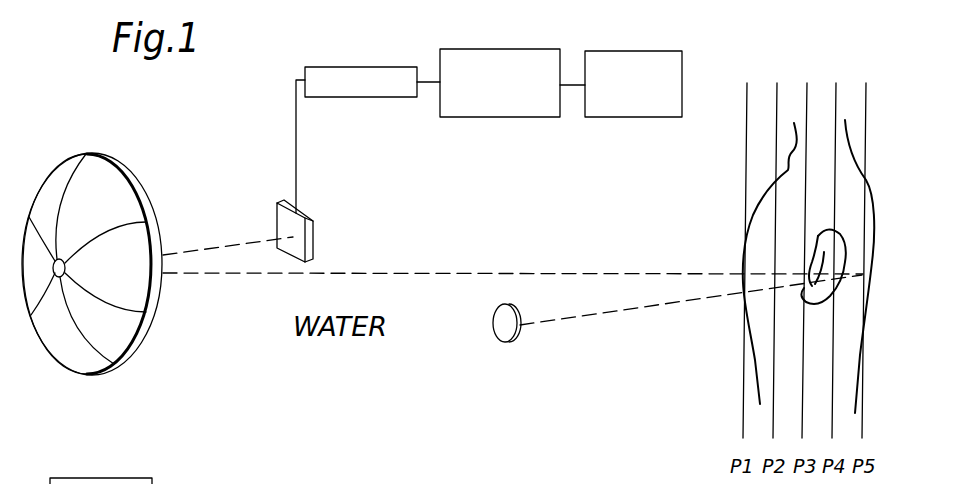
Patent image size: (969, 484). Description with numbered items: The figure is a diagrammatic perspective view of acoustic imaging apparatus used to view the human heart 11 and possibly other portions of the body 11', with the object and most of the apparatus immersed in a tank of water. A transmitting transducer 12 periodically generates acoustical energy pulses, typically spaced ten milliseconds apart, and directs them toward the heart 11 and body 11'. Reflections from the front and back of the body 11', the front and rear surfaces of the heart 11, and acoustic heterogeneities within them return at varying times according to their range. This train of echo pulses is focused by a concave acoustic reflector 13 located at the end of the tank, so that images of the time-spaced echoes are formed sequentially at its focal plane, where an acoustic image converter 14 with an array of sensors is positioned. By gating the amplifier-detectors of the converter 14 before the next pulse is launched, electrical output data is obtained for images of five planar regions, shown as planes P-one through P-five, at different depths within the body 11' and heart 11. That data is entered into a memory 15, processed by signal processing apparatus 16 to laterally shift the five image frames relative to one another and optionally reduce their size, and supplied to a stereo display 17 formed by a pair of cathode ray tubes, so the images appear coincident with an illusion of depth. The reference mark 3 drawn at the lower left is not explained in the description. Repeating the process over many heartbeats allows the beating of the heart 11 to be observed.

The section line / detail reference 3 is at (107, 470).
The human heart 11 is at (777, 263).
The body 11' is at (882, 266).
The transmitting transducer 12 is at (502, 329).
The acoustic reflector 13 is at (117, 187).
The acoustic image converter 14 is at (296, 226).
The memory 15 is at (330, 67).
The signal processing apparatus 16 is at (456, 52).
The stereo display 17 is at (621, 52).